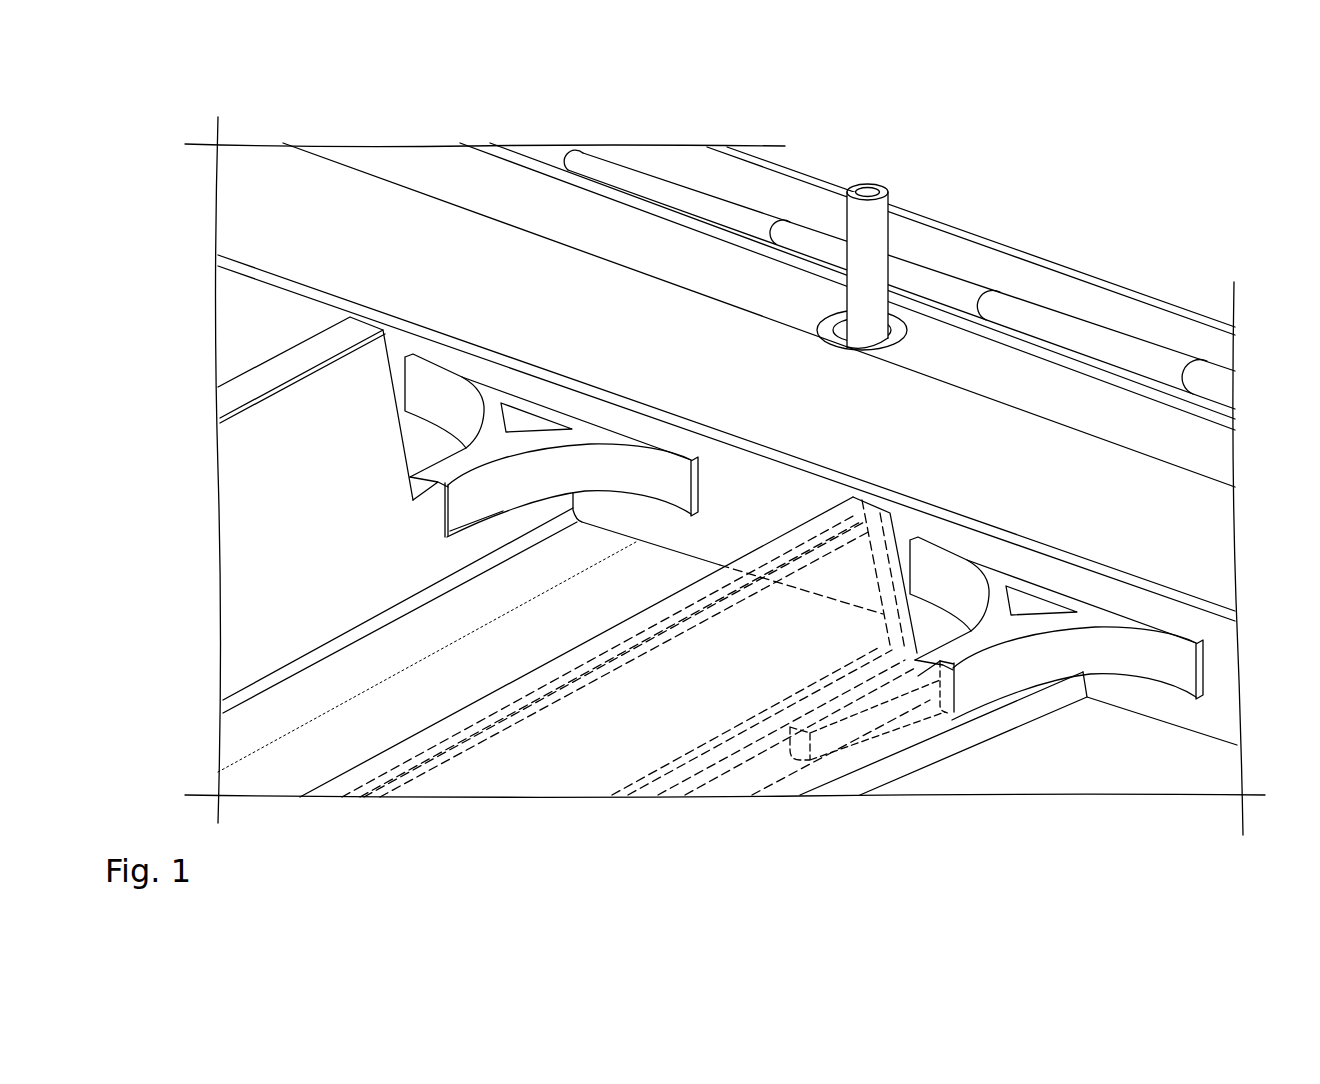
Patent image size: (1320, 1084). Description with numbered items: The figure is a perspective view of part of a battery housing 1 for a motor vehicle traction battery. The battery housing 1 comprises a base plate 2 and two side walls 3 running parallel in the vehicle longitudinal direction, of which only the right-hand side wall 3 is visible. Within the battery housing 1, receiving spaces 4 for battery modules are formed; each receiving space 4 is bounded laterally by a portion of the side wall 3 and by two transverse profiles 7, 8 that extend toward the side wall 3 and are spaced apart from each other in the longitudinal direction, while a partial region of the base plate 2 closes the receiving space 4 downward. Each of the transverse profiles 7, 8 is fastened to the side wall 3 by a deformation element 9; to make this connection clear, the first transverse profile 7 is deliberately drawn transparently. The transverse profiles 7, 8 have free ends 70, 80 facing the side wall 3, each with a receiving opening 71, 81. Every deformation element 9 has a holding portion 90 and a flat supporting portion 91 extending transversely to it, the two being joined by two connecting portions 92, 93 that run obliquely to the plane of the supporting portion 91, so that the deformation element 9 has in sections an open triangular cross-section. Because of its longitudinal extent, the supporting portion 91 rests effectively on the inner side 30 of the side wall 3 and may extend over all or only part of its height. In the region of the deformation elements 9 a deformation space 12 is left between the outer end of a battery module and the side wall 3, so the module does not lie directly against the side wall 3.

The battery housing 1 is at (203, 663).
The base plate 2 is at (320, 755).
The side wall 3 is at (712, 365).
The receiving space 4 is at (419, 642).
The first transverse profile 7 is at (588, 710).
The transverse profile 8 is at (275, 467).
The deformation element 9 is at (799, 536).
The deformation space 12 is at (563, 561).
The inner side of the side wall 30 is at (1212, 710).
The free end of the first transverse profile 70 is at (918, 655).
The receiving opening of the first transverse profile 71 is at (948, 696).
The free end of the transverse profile 80 is at (416, 497).
The receiving opening of the transverse profile 81 is at (447, 498).
The holding portion 90 is at (873, 712).
The supporting portion 91 is at (673, 476).
The connecting portion 92 is at (558, 474).
The connecting portion 93 is at (482, 418).